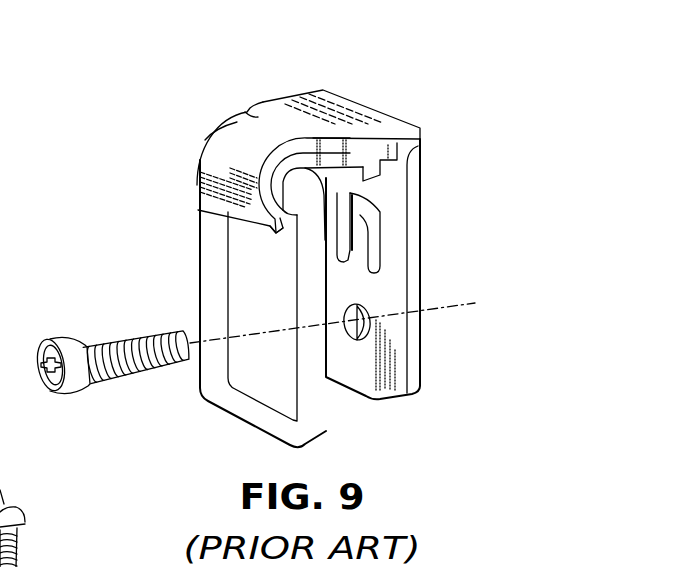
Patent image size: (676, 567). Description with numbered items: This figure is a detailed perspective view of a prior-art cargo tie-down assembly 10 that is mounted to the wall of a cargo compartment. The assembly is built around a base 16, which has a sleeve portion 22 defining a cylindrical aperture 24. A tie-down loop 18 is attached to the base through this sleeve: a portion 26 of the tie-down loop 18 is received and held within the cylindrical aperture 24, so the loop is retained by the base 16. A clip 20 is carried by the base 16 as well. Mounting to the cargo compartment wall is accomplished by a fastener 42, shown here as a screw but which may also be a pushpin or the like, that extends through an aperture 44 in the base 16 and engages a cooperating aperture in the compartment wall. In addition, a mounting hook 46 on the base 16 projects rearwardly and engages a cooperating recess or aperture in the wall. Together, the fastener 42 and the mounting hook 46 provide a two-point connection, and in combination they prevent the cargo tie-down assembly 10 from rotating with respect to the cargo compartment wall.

The cargo tie-down assembly 10 is at (383, 70).
The base 16 is at (388, 297).
The tie-down loop 18 is at (195, 317).
The clip 20 is at (268, 125).
The sleeve portion 22 is at (283, 203).
The cylindrical aperture 24 is at (280, 185).
The portion of the tie-down loop 26 is at (300, 172).
The fastener 42 is at (117, 333).
The aperture 44 is at (358, 340).
The mounting hook 46 is at (370, 230).